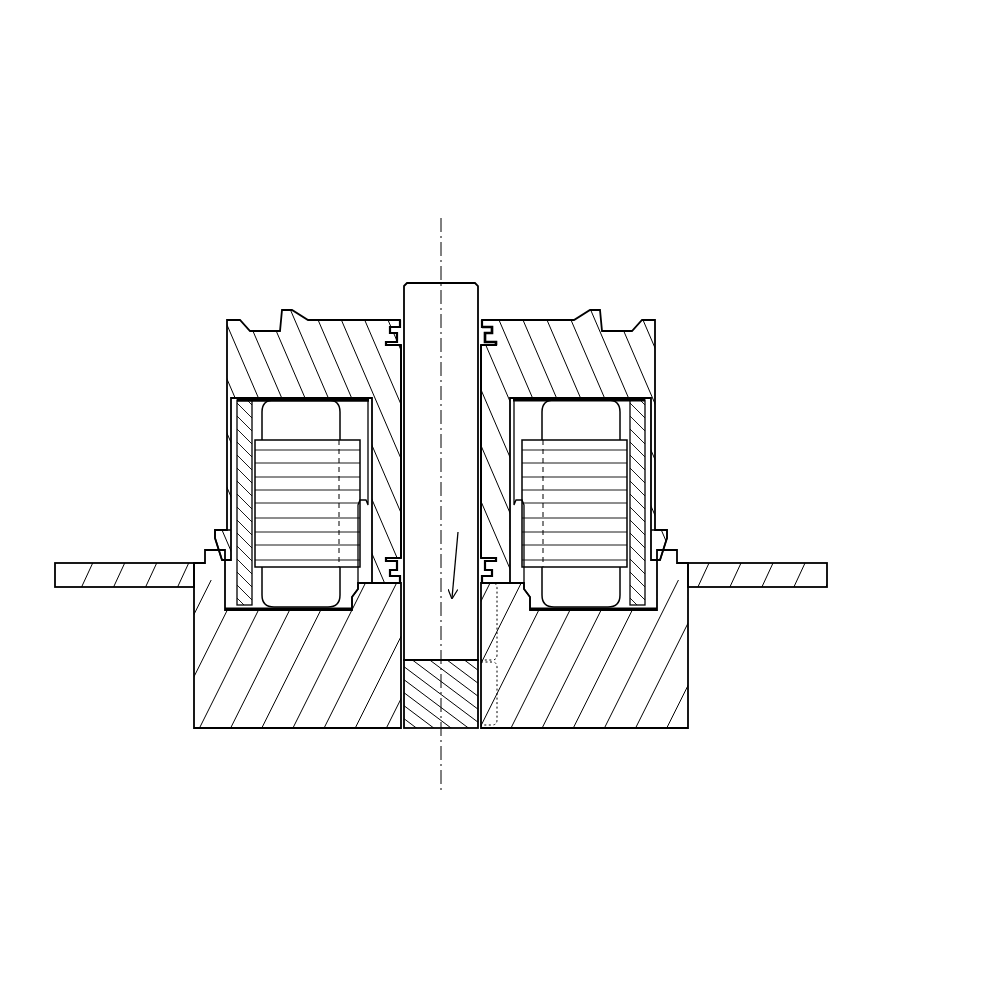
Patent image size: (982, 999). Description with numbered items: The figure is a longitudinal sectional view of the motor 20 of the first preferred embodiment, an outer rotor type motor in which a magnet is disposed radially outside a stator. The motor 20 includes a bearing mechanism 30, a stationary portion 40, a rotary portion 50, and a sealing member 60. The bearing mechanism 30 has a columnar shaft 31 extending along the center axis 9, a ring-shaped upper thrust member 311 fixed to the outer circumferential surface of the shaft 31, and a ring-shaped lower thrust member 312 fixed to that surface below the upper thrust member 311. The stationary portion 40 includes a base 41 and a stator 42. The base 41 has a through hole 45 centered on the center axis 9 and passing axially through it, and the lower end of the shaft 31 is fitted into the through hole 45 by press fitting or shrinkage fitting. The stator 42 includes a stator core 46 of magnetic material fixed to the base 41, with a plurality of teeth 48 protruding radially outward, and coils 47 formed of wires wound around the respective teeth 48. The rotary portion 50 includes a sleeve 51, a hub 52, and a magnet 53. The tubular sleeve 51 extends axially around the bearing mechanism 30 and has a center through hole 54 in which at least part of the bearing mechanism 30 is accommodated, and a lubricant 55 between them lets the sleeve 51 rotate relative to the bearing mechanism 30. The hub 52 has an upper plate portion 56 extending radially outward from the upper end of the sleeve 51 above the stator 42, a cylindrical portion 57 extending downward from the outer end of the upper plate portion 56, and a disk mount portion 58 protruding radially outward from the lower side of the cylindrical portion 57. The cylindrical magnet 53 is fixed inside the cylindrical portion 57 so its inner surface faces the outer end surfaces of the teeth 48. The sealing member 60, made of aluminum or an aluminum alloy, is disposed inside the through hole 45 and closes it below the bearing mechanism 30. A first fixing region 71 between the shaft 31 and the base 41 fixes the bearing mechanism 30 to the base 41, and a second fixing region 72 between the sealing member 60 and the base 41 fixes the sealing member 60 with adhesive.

The motor 20 is at (531, 98).
The bearing mechanism 30 is at (417, 280).
The center axis 9 is at (441, 238).
The shaft 31 is at (460, 290).
The upper thrust member 311 is at (497, 325).
The lower thrust member 312 is at (397, 586).
The stationary portion 40 is at (451, 696).
The base 41 is at (628, 720).
The stator 42 is at (550, 486).
The through hole 45 is at (460, 549).
The stator core 46 is at (598, 457).
The coil 47 is at (598, 424).
The tooth 48 is at (610, 485).
The rotary portion 50 is at (268, 325).
The sleeve 51 is at (390, 432).
The hub 52 is at (453, 486).
The magnet 53 is at (638, 513).
The center through hole 54 is at (482, 391).
The lubricant 55 is at (482, 358).
The upper plate portion 56 is at (287, 377).
The cylindrical portion 57 is at (233, 413).
The disk mount portion 58 is at (213, 537).
The sealing member 60 is at (421, 722).
The first fixing region 71 is at (522, 623).
The second fixing region 72 is at (522, 693).